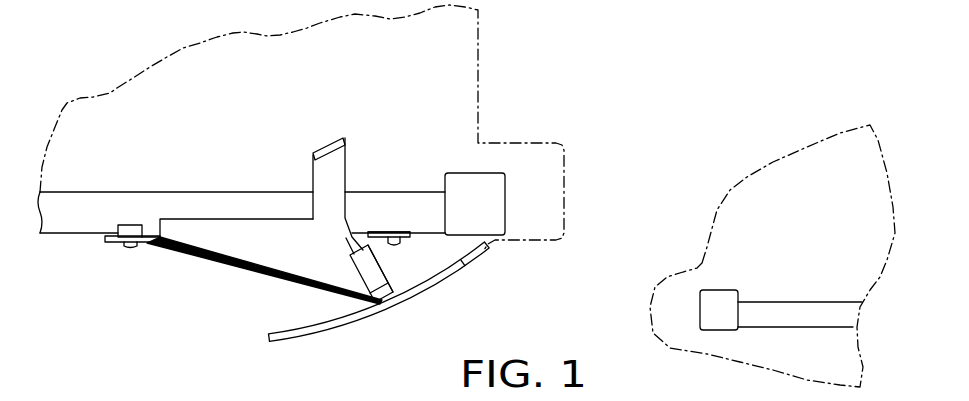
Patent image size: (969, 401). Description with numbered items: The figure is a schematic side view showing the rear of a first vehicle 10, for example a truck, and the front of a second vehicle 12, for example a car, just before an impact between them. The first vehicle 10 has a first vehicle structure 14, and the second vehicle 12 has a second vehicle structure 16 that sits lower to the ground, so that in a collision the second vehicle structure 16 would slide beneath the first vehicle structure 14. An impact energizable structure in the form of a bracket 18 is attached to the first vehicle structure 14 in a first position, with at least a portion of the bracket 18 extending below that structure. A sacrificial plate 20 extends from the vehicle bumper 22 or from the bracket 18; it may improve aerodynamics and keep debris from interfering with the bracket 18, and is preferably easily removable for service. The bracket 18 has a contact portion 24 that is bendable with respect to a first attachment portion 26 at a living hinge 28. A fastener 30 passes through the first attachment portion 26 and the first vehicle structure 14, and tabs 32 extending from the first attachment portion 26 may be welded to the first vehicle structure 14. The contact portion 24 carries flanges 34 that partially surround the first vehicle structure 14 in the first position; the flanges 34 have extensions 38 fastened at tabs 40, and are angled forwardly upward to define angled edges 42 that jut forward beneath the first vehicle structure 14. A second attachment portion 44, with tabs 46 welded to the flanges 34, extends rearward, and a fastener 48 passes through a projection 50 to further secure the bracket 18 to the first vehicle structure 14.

The first vehicle 10 is at (480, 76).
The second vehicle 12 is at (815, 147).
The first vehicle structure 14 is at (74, 237).
The second vehicle structure 16 is at (822, 326).
The bracket 18 is at (203, 255).
The sacrificial plate 20 is at (462, 272).
The vehicle bumper 22 is at (507, 206).
The contact portion 24 is at (261, 267).
The first attachment portion 26 is at (112, 243).
The living hinge 28 is at (150, 242).
The fastener 30 is at (130, 248).
The tabs 32 is at (130, 225).
The flanges 34 is at (235, 219).
The extensions 38 is at (348, 168).
The tabs 40 is at (330, 145).
The angled edges 42 is at (367, 233).
The second attachment portion 44 is at (383, 259).
The tabs 46 is at (360, 275).
The fastener 48 is at (392, 246).
The projection 50 is at (392, 228).